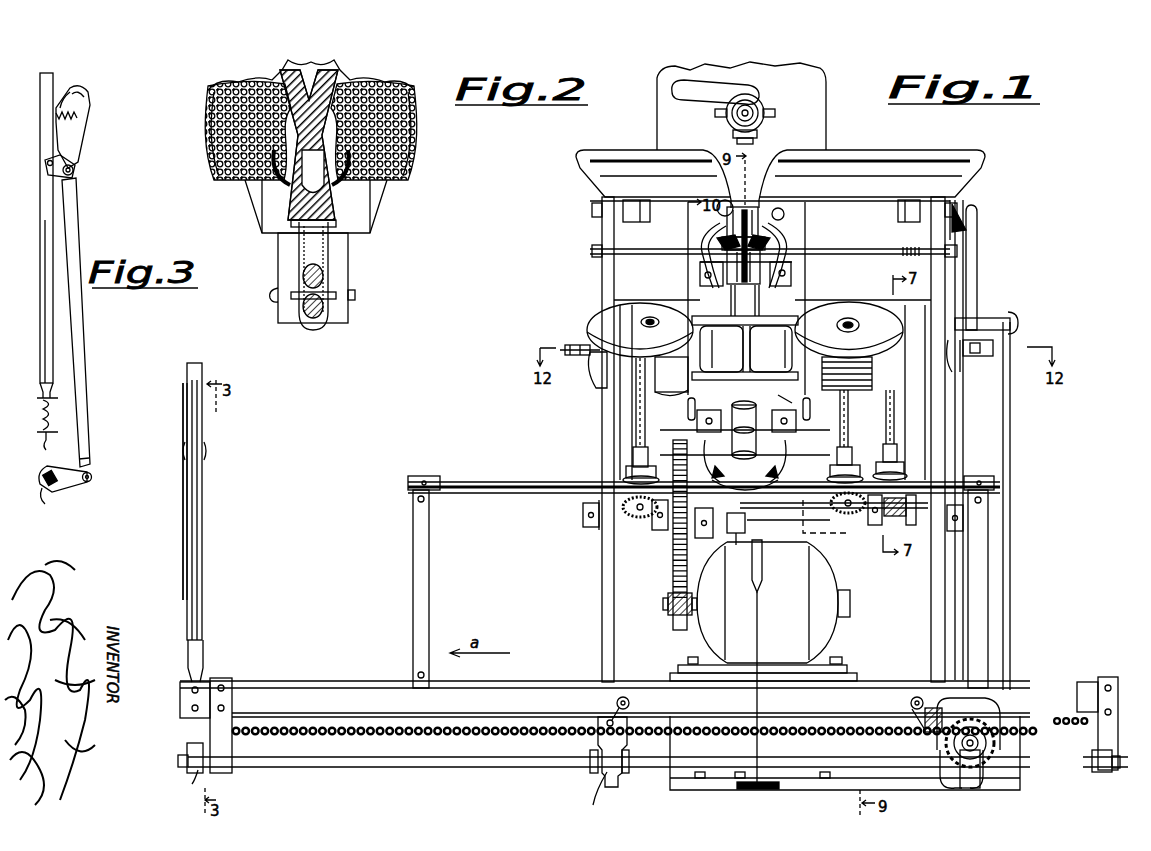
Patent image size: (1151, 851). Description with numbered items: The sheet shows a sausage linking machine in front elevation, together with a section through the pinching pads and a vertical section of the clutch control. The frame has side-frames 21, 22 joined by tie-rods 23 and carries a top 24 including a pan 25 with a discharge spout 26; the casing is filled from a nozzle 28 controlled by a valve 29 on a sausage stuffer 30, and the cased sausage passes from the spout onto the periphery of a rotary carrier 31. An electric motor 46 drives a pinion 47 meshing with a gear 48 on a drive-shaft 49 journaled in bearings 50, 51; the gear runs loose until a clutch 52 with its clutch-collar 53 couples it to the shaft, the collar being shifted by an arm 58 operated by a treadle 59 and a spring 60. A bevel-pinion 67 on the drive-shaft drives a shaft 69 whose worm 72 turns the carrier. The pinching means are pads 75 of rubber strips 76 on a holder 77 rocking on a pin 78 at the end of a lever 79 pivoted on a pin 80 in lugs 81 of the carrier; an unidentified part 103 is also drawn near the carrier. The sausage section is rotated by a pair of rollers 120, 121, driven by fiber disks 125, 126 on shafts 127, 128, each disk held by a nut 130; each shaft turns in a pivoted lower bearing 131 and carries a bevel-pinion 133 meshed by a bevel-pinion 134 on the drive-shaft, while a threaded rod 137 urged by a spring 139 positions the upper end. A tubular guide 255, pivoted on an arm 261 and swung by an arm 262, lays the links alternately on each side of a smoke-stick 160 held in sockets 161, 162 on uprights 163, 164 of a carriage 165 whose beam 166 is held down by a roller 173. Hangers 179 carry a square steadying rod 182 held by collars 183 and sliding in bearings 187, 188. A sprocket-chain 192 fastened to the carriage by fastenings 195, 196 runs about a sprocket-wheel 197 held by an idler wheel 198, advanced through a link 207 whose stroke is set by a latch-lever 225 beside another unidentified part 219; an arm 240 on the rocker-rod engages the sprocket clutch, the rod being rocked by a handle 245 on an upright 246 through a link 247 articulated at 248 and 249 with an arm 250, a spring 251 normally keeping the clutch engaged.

In FIG. 1, the side-frame 21 is at (604, 613).
In FIG. 1, the side-frame 22 is at (930, 624).
In FIG. 1, the tie-rods 23 is at (868, 254).
In FIG. 1, the top 24 is at (852, 205).
In FIG. 1, the pan 25 is at (852, 158).
In FIG. 1, the discharge spout 26 is at (763, 205).
In FIG. 1, the nozzle 28 is at (766, 112).
In FIG. 1, the valve 29 is at (752, 98).
In FIG. 1, the sausage stuffer 30 is at (826, 120).
In FIG. 1, the rotary carrier 31 is at (760, 277).
In FIG. 1, the electric motor 46 is at (828, 634).
In FIG. 1, the pinion 47 is at (672, 616).
In FIG. 1, the gear 48 is at (673, 572).
In FIG. 1, the drive-shaft 49 is at (584, 518).
In FIG. 1, the bearing 50 is at (598, 532).
In FIG. 1, the bearing 51 is at (950, 532).
In FIG. 1, the clutch 52 is at (700, 540).
In FIG. 1, the clutch-collar 53 is at (734, 545).
In FIG. 1, the arm 58 is at (759, 613).
In FIG. 1, the treadle 59 is at (760, 790).
In FIG. 1, the spring 60 is at (765, 540).
In FIG. 1, the bevel-pinion 67 is at (888, 525).
In FIG. 1, the shaft 69 is at (896, 421).
In FIG. 1, the worm 72 is at (860, 386).
In FIG. 2, the pads 75 is at (341, 128).
In FIG. 2, the rubber strips 76 is at (340, 84).
In FIG. 2, the holder 77 is at (329, 259).
In FIG. 2, the pin 78 is at (303, 318).
In FIG. 2, the lever 79 is at (314, 326).
In FIG. 1, the lever 79 is at (702, 247).
In FIG. 2, the pin 80 is at (274, 304).
In FIG. 2, the lugs 81 is at (284, 258).
In FIG. 1, the pin 103 is at (656, 402).
In FIG. 1, the roller 120 is at (703, 233).
In FIG. 1, the roller 121 is at (782, 226).
In FIG. 1, the rotating disk 125 is at (633, 305).
In FIG. 1, the rotating disk 126 is at (868, 310).
In FIG. 1, the shaft 127 is at (636, 425).
In FIG. 1, the shaft 128 is at (849, 437).
In FIG. 1, the nut 130 is at (641, 325).
In FIG. 1, the lower bearing 131 is at (650, 466).
In FIG. 1, the bevel-pinion 133 is at (637, 518).
In FIG. 1, the bevel-pinion 134 is at (660, 532).
In FIG. 1, the threaded rod 137 is at (570, 345).
In FIG. 1, the spring 139 is at (590, 360).
In FIG. 1, the smoke-stick 160 is at (476, 484).
In FIG. 1, the socket 161 is at (421, 478).
In FIG. 1, the socket 162 is at (976, 478).
In FIG. 1, the upright 163 is at (421, 594).
In FIG. 1, the upright 164 is at (982, 602).
In FIG. 1, the carriage 165 is at (514, 682).
In FIG. 3, the beam 166 is at (44, 446).
In FIG. 1, the beam 166 is at (372, 689).
In FIG. 1, the roller 173 is at (632, 710).
In FIG. 1, the hangers 179 is at (233, 740).
In FIG. 3, the steadying rod 182 is at (52, 505).
In FIG. 1, the steadying rod 182 is at (879, 762).
In FIG. 1, the collars 183 is at (238, 771).
In FIG. 1, the bearing 187 is at (583, 799).
In FIG. 1, the bearing 188 is at (925, 776).
In FIG. 1, the sprocket-chain 192 is at (472, 728).
In FIG. 1, the fastening 195 is at (238, 716).
In FIG. 1, the fastening 196 is at (1085, 739).
In FIG. 1, the sprocket-wheel 197 is at (995, 741).
In FIG. 1, the idler wheel 198 is at (938, 710).
In FIG. 1, the link 207 is at (1010, 495).
In FIG. 1, the rod 219 is at (972, 247).
In FIG. 1, the latch-lever 225 is at (960, 222).
In FIG. 1, the arm 240 is at (978, 778).
In FIG. 3, the handle 245 is at (78, 136).
In FIG. 1, the handle 245 is at (207, 418).
In FIG. 3, the upright 246 is at (43, 190).
In FIG. 1, the upright 246 is at (203, 520).
In FIG. 3, the link 247 is at (78, 223).
In FIG. 3, the articulation 248 is at (76, 173).
In FIG. 3, the articulation 249 is at (91, 475).
In FIG. 3, the arm 250 is at (74, 483).
In FIG. 1, the arm 250 is at (180, 781).
In FIG. 3, the spring 251 is at (66, 96).
In FIG. 1, the guide 255 is at (782, 412).
In FIG. 1, the arm 261 is at (690, 436).
In FIG. 1, the arm 262 is at (800, 412).